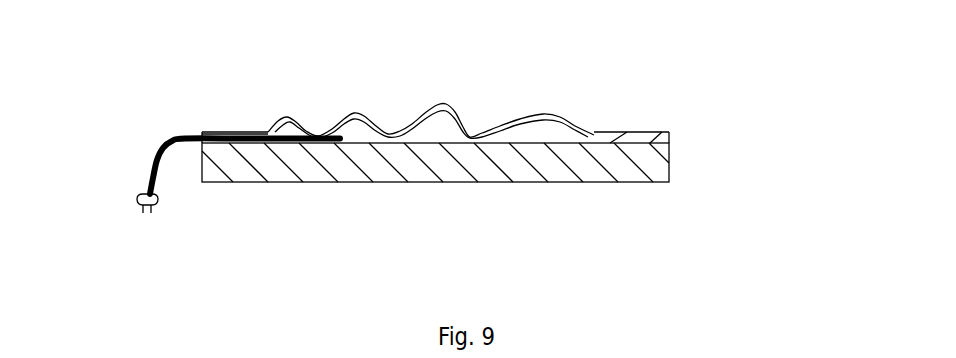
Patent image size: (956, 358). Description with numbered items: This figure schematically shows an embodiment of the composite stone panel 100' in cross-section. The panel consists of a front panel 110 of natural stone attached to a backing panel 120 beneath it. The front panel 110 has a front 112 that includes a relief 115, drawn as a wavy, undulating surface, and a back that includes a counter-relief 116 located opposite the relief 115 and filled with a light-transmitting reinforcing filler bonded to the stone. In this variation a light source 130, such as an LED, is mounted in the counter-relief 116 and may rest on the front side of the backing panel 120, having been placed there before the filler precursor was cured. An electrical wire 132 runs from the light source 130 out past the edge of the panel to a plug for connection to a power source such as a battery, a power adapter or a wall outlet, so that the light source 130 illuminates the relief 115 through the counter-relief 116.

The composite stone panel 100' is at (675, 57).
The front panel 110 is at (669, 135).
The front 112 is at (233, 133).
The relief 115 is at (363, 122).
The counter-relief 116 is at (435, 134).
The backing panel 120 is at (669, 168).
The light source 130 is at (340, 141).
The electrical wire 132 is at (158, 160).